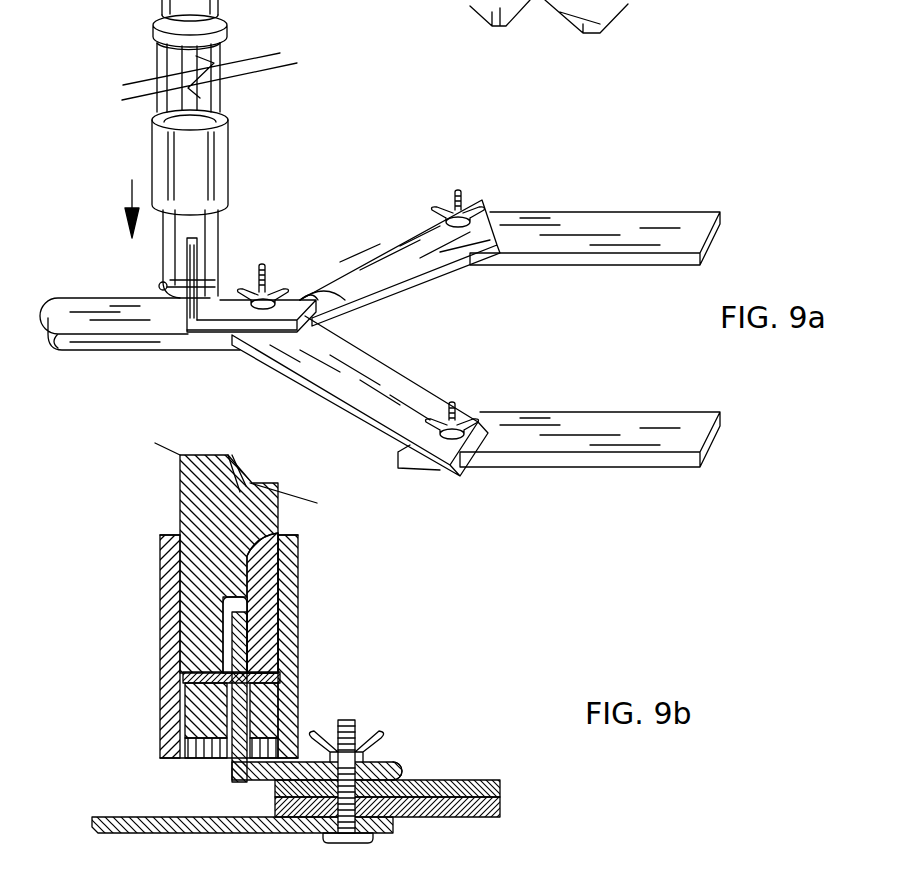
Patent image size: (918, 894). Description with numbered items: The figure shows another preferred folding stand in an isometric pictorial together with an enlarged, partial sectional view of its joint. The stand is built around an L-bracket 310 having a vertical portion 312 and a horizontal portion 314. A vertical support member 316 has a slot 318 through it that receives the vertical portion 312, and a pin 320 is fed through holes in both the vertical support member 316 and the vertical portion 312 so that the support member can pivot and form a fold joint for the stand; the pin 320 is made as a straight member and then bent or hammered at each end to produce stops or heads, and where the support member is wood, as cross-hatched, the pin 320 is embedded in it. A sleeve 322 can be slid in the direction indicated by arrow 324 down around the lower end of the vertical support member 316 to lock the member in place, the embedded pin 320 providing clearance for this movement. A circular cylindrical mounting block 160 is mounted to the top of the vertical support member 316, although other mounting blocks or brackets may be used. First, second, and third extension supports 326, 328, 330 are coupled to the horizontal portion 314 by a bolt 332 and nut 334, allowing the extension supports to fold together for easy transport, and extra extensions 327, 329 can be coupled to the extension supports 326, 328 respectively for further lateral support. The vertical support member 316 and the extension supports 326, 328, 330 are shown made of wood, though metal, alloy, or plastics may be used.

In FIG. 9A, the circular cylindrical mounting block 160 is at (153, 3).
In FIG. 9A, the L-bracket 310 is at (207, 348).
In FIG. 9B, the L-bracket 310 is at (317, 771).
In FIG. 9A, the vertical portion 312 is at (187, 258).
In FIG. 9B, the vertical portion 312 is at (207, 762).
In FIG. 9A, the horizontal portion 314 is at (320, 290).
In FIG. 9B, the horizontal portion 314 is at (392, 766).
In FIG. 9A, the vertical support member 316 is at (222, 94).
In FIG. 9B, the vertical support member 316 is at (196, 479).
In FIG. 9A, the slot 318 is at (198, 247).
In FIG. 9B, the slot 318 is at (250, 605).
In FIG. 9A, the pin 320 is at (159, 286).
In FIG. 9B, the pin 320 is at (177, 678).
In FIG. 9A, the sleeve 322 is at (155, 148).
In FIG. 9B, the sleeve 322 is at (172, 558).
In FIG. 9A, the arrow 324 is at (123, 192).
In FIG. 9A, the first extension support 326 is at (400, 390).
In FIG. 9B, the first extension support 326 is at (435, 780).
In FIG. 9A, the extra extension 327 is at (633, 420).
In FIG. 9A, the second extension support 328 is at (377, 243).
In FIG. 9B, the second extension support 328 is at (477, 818).
In FIG. 9A, the extra extension 329 is at (588, 218).
In FIG. 9A, the third extension support 330 is at (75, 342).
In FIG. 9B, the third extension support 330 is at (160, 834).
In FIG. 9A, the bolt 332 is at (262, 272).
In FIG. 9B, the bolt 332 is at (355, 722).
In FIG. 9A, the nut 334 is at (278, 292).